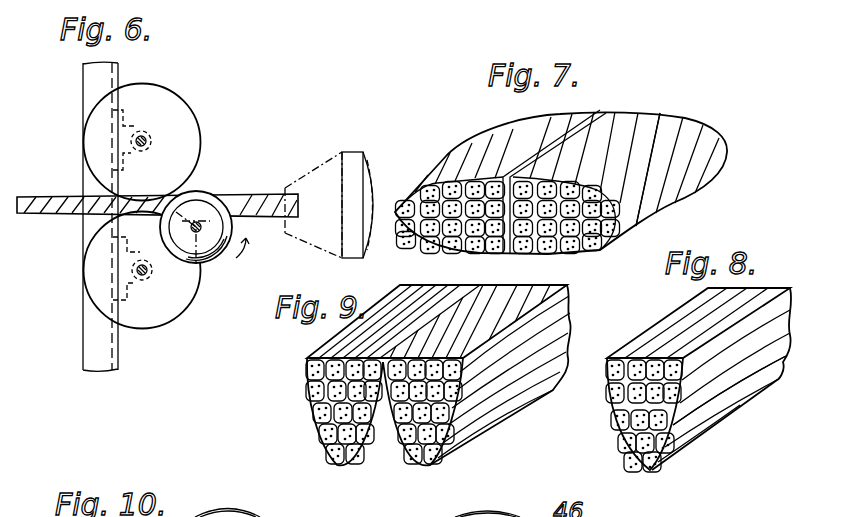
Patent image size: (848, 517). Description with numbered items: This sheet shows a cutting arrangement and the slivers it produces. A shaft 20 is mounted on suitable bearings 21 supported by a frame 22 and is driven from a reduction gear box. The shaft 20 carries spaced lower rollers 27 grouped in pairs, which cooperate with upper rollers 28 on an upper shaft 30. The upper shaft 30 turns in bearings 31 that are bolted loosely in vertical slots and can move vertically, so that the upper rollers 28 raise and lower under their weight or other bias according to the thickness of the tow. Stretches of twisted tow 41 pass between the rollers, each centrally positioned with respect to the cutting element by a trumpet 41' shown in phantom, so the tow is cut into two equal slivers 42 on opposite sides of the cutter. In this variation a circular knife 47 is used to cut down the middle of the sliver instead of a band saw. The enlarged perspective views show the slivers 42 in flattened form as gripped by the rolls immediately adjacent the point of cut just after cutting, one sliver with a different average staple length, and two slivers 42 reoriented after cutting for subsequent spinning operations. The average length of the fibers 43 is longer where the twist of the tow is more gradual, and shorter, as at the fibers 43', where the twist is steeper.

In FIG. 6, the shaft 20 is at (136, 271).
In FIG. 6, the bearings 21 is at (112, 292).
In FIG. 6, the frame 22 is at (96, 352).
In FIG. 6, the lower rollers 27 is at (174, 308).
In FIG. 6, the upper rollers 28 is at (192, 132).
In FIG. 6, the upper shaft 30 is at (145, 135).
In FIG. 6, the bearings 31 is at (131, 156).
In FIG. 6, the twisted tow 41 is at (168, 186).
In FIG. 6, the trumpet 41' is at (344, 184).
In FIG. 6, the circular knife 47 is at (198, 192).
In FIG. 7, the slivers 42 is at (567, 113).
In FIG. 9, the slivers 42 is at (437, 293).
In FIG. 8, the slivers 42 is at (660, 470).
In FIG. 7, the fibers of shorter staple length 43' is at (666, 171).
In FIG. 8, the fibers 43 is at (729, 402).